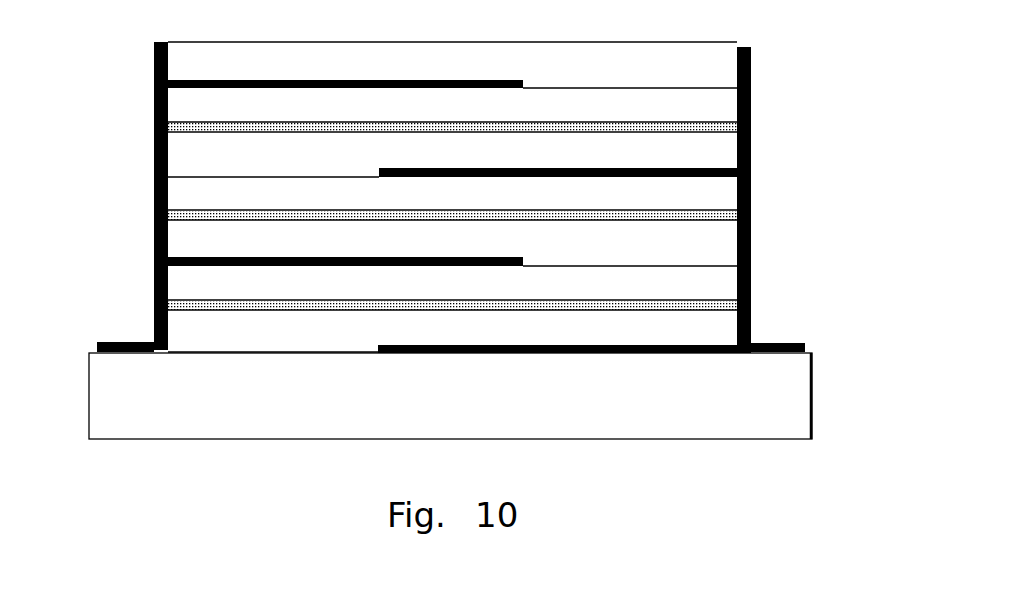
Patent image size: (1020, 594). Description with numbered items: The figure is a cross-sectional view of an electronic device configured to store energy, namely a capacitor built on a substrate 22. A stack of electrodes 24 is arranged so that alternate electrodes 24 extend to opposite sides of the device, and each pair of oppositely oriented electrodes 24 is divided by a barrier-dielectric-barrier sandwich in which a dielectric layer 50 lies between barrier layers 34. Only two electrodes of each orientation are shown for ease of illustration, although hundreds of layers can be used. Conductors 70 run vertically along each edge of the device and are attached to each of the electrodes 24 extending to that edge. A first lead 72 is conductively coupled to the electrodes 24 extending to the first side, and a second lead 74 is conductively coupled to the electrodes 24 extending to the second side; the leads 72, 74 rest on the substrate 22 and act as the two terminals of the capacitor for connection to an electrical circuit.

The substrate 22 is at (436, 412).
The electrodes 24 is at (438, 216).
The barrier layer 34 is at (661, 79).
The dielectric layers 50 is at (207, 133).
The conductors 70 is at (153, 75).
The first lead 72 is at (782, 342).
The second lead 74 is at (125, 340).